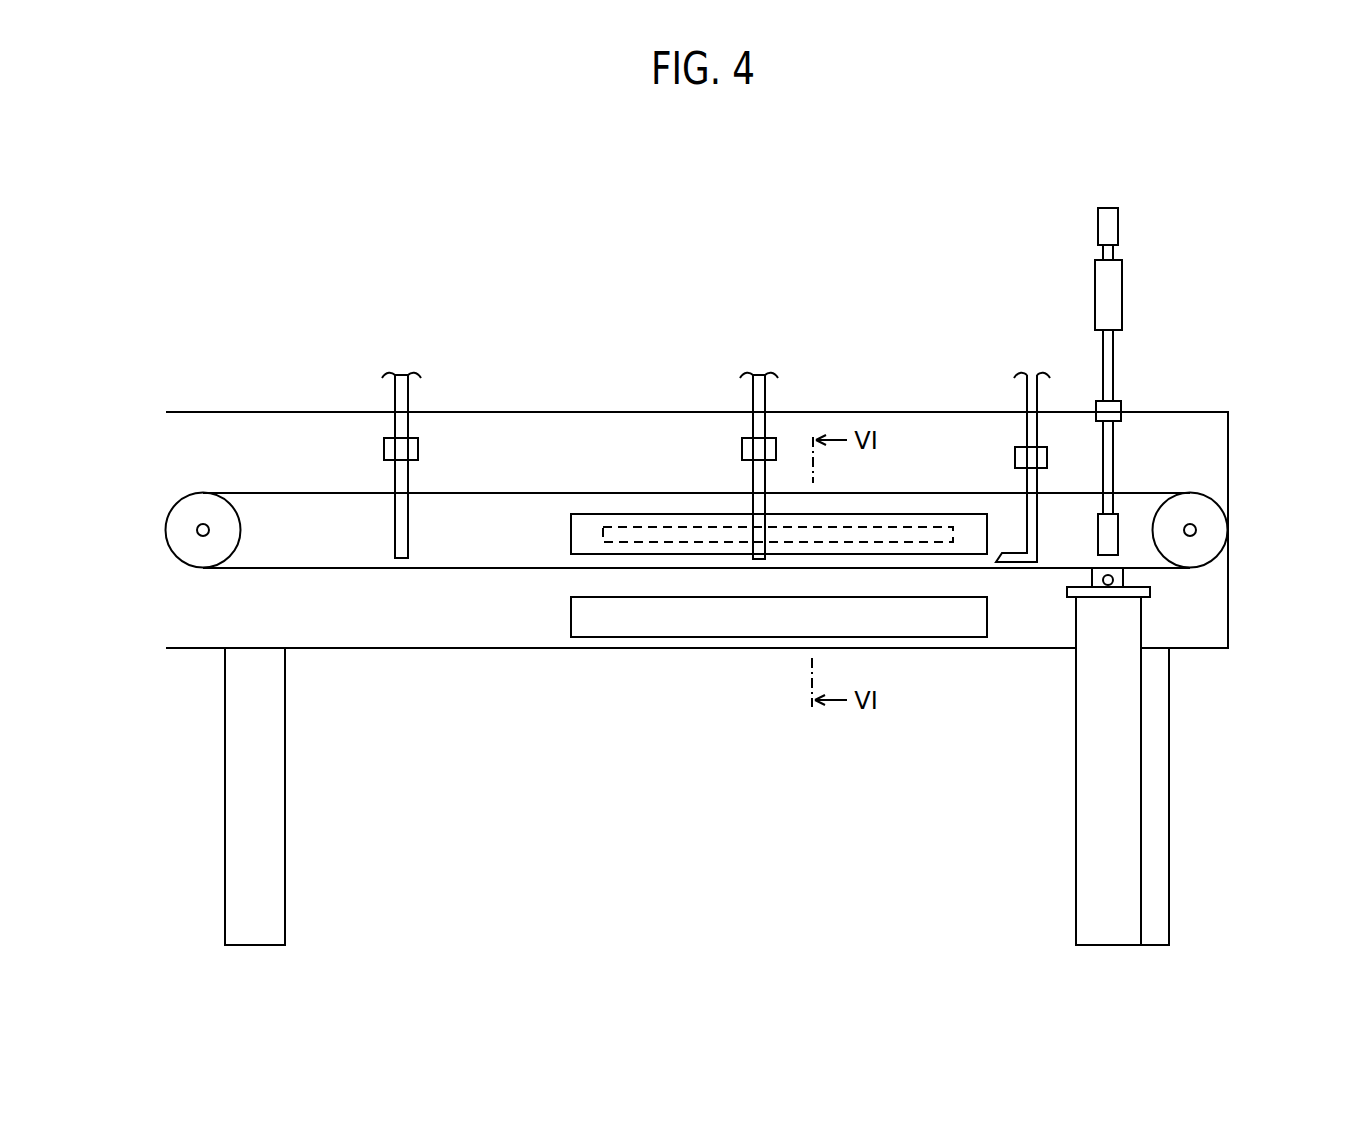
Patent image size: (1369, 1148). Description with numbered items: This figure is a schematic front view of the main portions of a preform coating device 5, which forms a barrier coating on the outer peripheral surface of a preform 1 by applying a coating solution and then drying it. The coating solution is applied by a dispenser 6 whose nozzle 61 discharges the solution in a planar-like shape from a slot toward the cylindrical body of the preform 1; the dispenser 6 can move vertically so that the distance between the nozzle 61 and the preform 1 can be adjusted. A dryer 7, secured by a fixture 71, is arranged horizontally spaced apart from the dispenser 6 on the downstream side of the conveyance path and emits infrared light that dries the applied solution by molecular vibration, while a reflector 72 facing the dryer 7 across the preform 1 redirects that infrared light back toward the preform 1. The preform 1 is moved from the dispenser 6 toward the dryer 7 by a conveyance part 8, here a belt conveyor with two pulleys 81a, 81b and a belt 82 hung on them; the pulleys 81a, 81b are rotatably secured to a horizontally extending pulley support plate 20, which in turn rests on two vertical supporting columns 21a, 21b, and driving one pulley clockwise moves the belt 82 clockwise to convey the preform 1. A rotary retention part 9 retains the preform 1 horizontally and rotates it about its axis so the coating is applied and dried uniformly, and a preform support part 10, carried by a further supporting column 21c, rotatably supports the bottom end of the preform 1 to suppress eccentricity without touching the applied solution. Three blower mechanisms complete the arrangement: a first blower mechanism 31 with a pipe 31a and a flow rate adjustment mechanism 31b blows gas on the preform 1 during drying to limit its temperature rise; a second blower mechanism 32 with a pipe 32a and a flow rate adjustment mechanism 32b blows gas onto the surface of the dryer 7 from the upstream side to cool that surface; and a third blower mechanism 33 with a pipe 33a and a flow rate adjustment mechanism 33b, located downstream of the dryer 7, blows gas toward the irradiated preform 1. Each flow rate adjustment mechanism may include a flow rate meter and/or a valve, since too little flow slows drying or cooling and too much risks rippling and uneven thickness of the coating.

The preform 1 is at (1108, 585).
The preform coating device 5 is at (295, 232).
The dispenser 6 is at (1183, 381).
The nozzle 61 is at (1118, 530).
The dryer 7 is at (915, 525).
The fixture 71 is at (585, 514).
The reflector 72 is at (962, 640).
The conveyance part 8 is at (697, 428).
The pulley 81a is at (1215, 505).
The pulley 81b is at (188, 497).
The belt 82 is at (950, 493).
The rotary retention part 9 is at (1123, 575).
The preform support part 10 is at (1150, 592).
The pulley support plate 20 is at (690, 650).
The supporting column 21a is at (1169, 850).
The supporting column 21b is at (285, 860).
The supporting column 21c is at (1075, 882).
The first blower mechanism 31 is at (719, 419).
The pipe 31a is at (753, 392).
The flow rate adjustment mechanism 31b is at (742, 448).
The second blower mechanism 32 is at (1028, 410).
The pipe 32a is at (1037, 400).
The flow rate adjustment mechanism 32b is at (1015, 455).
The third blower mechanism 33 is at (395, 419).
The pipe 33a is at (395, 393).
The flow rate adjustment mechanism 33b is at (418, 448).